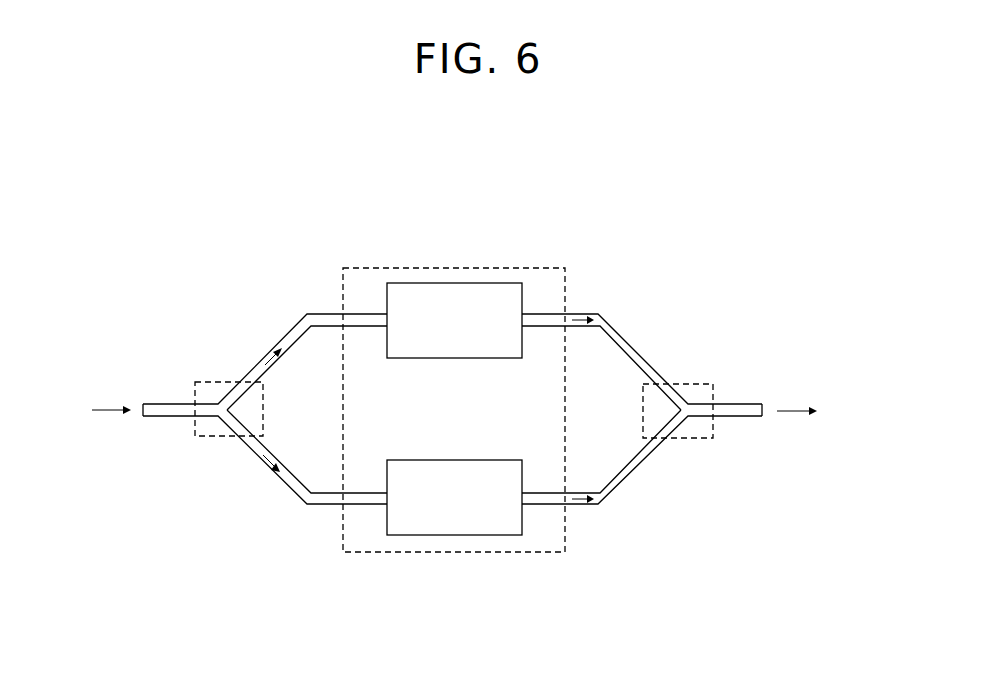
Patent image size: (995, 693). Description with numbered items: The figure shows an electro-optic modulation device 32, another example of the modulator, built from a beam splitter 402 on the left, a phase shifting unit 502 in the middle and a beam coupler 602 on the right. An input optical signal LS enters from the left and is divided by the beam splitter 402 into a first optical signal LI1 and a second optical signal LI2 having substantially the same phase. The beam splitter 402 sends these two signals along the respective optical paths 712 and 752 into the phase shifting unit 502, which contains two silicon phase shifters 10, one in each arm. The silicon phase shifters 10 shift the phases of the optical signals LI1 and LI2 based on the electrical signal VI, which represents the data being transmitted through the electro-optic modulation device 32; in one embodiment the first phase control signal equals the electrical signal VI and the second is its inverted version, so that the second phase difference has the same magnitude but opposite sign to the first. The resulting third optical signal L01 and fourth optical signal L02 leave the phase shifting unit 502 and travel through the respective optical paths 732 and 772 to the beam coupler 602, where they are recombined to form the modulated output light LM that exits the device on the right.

The electro-optic modulation device 32 is at (442, 164).
The silicon phase shifter 10 is at (418, 358).
The beam splitter 402 is at (207, 437).
The beam coupler 602 is at (700, 440).
The phase shifting unit 502 is at (460, 552).
The optical path 712 is at (303, 318).
The optical path 752 is at (296, 495).
The optical path 732 is at (638, 352).
The optical path 772 is at (638, 468).
The first optical signal LI1 is at (263, 358).
The second optical signal LI2 is at (263, 460).
The third optical signal L01 is at (583, 315).
The fourth optical signal L02 is at (570, 505).
The input optical signal LS is at (97, 411).
The modulated light LM is at (817, 412).
The electrical signal VI is at (455, 263).